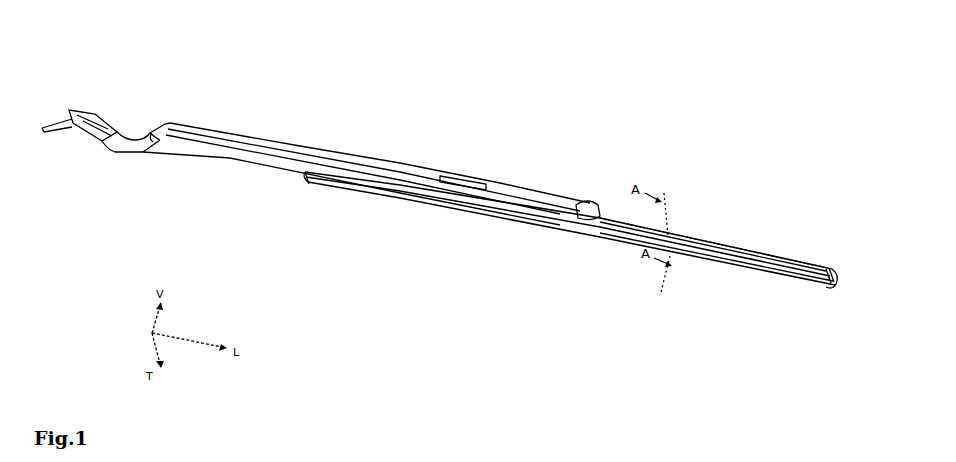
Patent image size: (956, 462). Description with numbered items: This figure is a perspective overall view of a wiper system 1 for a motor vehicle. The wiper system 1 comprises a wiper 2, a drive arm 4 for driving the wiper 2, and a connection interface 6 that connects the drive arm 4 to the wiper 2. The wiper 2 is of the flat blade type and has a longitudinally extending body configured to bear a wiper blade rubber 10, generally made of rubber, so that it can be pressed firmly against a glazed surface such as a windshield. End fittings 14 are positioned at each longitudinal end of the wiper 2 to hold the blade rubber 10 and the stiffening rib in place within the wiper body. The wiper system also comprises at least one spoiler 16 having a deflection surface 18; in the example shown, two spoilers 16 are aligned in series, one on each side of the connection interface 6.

The wiper system 1 is at (589, 110).
The wiper 2 is at (392, 184).
The drive arm 4 is at (201, 137).
The connection interface 6 is at (585, 207).
The wiper blade rubber 10 is at (379, 194).
The end fittings 14 is at (306, 181).
The spoiler 16 is at (738, 264).
The deflection surface 18 is at (701, 250).